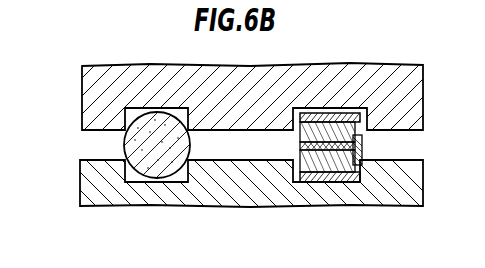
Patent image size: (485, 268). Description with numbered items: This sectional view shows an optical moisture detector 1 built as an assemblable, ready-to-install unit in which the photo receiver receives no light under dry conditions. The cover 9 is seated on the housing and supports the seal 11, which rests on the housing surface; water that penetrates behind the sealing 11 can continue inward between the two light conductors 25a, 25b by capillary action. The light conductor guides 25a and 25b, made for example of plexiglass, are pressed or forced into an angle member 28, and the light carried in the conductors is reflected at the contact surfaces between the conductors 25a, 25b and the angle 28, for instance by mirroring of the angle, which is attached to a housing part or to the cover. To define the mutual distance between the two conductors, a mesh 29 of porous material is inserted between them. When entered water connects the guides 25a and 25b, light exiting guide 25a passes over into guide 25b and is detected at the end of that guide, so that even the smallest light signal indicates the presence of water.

The upper plate 1 is at (80, 84).
The cover 9 is at (96, 195).
The seal 11 is at (124, 144).
The light conductor guide 25a is at (337, 174).
The light conductor guide 25b is at (336, 126).
The angle member 28 is at (309, 181).
The mesh 29 is at (300, 146).